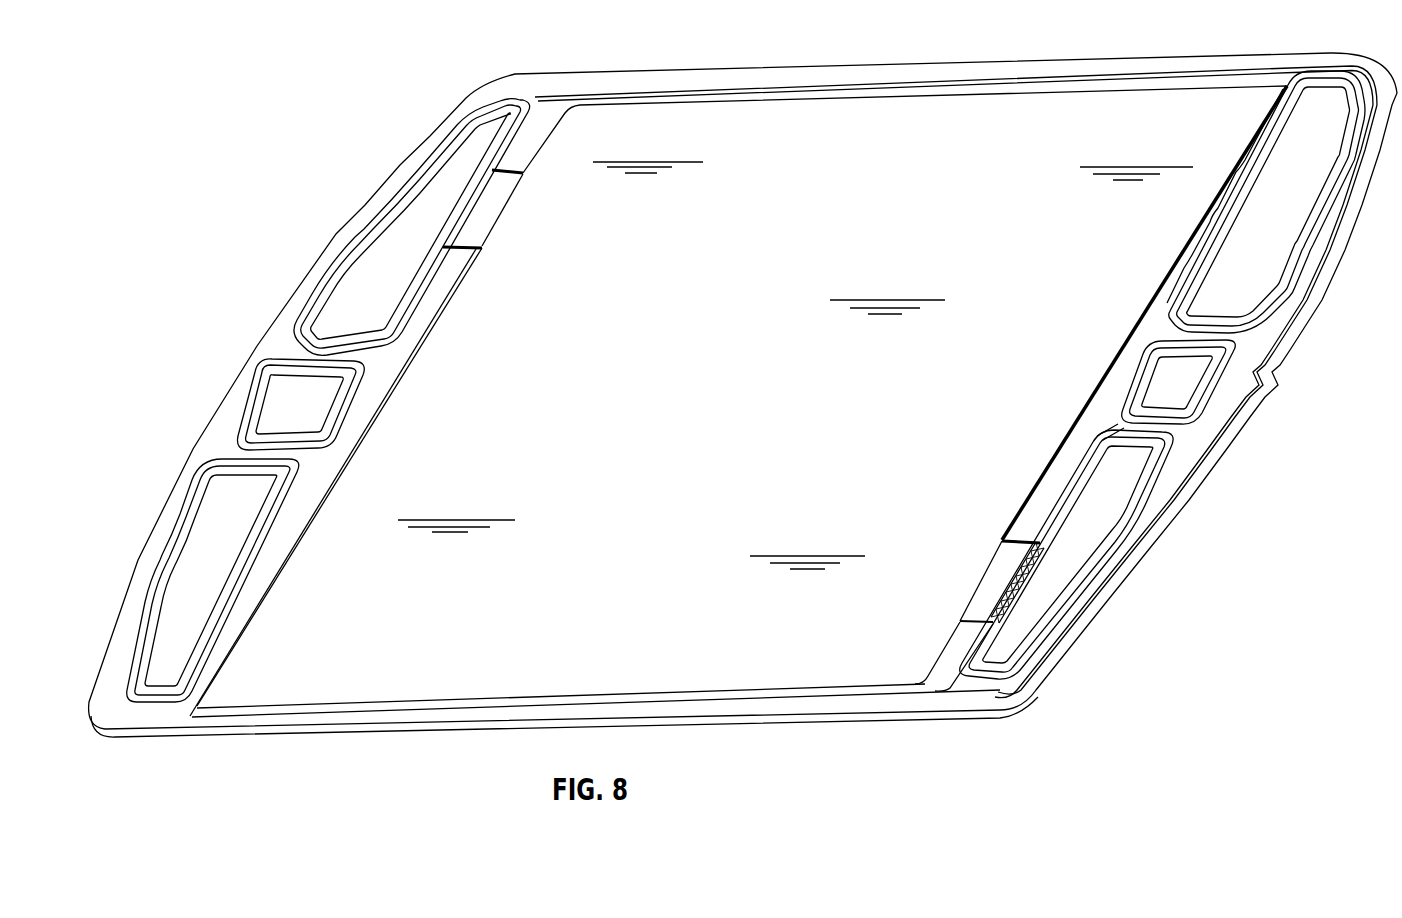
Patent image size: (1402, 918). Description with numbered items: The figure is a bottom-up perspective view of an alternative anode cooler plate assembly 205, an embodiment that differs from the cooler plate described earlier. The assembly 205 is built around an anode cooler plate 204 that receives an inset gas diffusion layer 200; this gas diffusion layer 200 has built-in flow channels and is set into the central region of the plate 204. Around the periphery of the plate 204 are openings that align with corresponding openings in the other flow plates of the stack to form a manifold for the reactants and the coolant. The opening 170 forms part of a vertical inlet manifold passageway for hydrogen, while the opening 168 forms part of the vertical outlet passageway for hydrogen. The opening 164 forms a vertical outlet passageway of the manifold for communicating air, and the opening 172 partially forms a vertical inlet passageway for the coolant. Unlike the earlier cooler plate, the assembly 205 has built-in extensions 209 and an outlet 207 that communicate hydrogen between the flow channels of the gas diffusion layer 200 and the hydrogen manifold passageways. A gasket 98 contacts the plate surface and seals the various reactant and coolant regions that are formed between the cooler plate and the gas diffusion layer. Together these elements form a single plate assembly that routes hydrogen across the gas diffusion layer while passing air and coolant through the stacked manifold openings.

The gasket 98 is at (140, 578).
The opening 170 is at (400, 260).
The opening 172 is at (287, 417).
The extensions 209 is at (490, 205).
The opening 164 is at (1272, 258).
The opening 168 is at (1042, 581).
The outlet 207 is at (996, 590).
The inset gas diffusion layer 200 is at (487, 672).
The anode cooler plate 204 is at (687, 728).
The anode cooler plate assembly 205 is at (1187, 509).